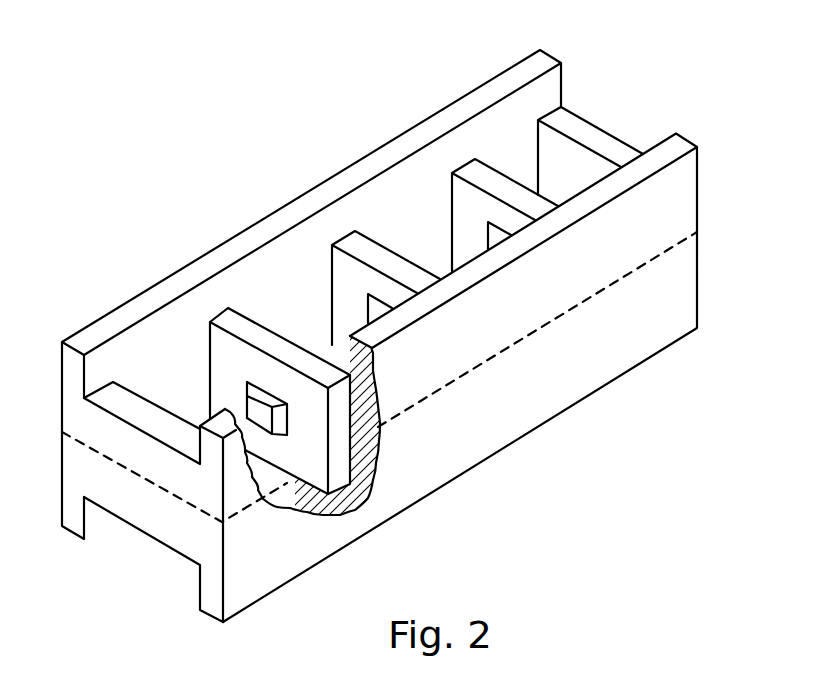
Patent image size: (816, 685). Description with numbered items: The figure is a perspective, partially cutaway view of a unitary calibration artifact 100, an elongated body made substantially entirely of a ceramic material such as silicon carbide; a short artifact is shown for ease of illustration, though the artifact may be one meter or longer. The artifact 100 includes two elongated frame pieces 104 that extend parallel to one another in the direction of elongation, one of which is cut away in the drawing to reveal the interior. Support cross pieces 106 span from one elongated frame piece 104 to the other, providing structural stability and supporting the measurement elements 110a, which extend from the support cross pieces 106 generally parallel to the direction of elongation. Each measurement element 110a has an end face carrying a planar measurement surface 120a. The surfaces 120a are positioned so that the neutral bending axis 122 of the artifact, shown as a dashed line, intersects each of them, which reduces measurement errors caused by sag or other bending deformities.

The unitary calibration artifact 100 is at (220, 161).
The elongated frame piece 104 is at (503, 78).
The support cross piece 106 is at (260, 333).
The measurement element 110a is at (257, 390).
The planar measurement surface 120a is at (255, 408).
The neutral bending axis 122 is at (80, 440).